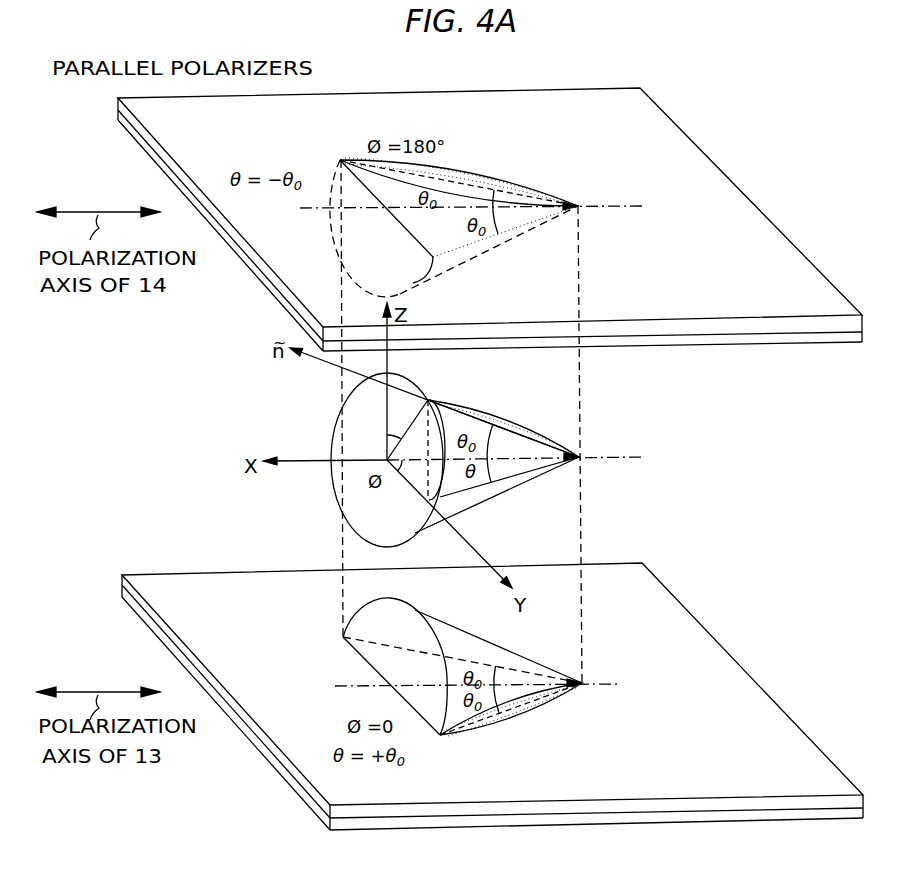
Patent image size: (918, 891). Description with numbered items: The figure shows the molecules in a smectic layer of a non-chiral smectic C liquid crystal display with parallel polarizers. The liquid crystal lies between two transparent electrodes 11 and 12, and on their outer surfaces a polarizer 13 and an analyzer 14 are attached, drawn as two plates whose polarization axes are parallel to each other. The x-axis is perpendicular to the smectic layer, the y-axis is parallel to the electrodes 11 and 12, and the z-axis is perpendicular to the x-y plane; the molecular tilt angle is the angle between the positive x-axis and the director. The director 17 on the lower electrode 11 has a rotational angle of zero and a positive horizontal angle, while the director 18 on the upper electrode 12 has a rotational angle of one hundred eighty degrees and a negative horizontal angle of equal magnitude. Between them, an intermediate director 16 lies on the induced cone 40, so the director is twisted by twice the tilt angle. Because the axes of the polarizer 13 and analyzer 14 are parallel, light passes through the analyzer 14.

The lower transparent electrode 11 is at (750, 668).
The upper transparent electrode 12 is at (782, 342).
The polarizer 13 is at (265, 758).
The analyzer 14 is at (740, 194).
The light ray in liquid crystal layer 16 is at (507, 420).
The director on the lower electrode 17 is at (520, 713).
The director on the upper electrode 18 is at (480, 178).
The induced cone 40 is at (507, 492).